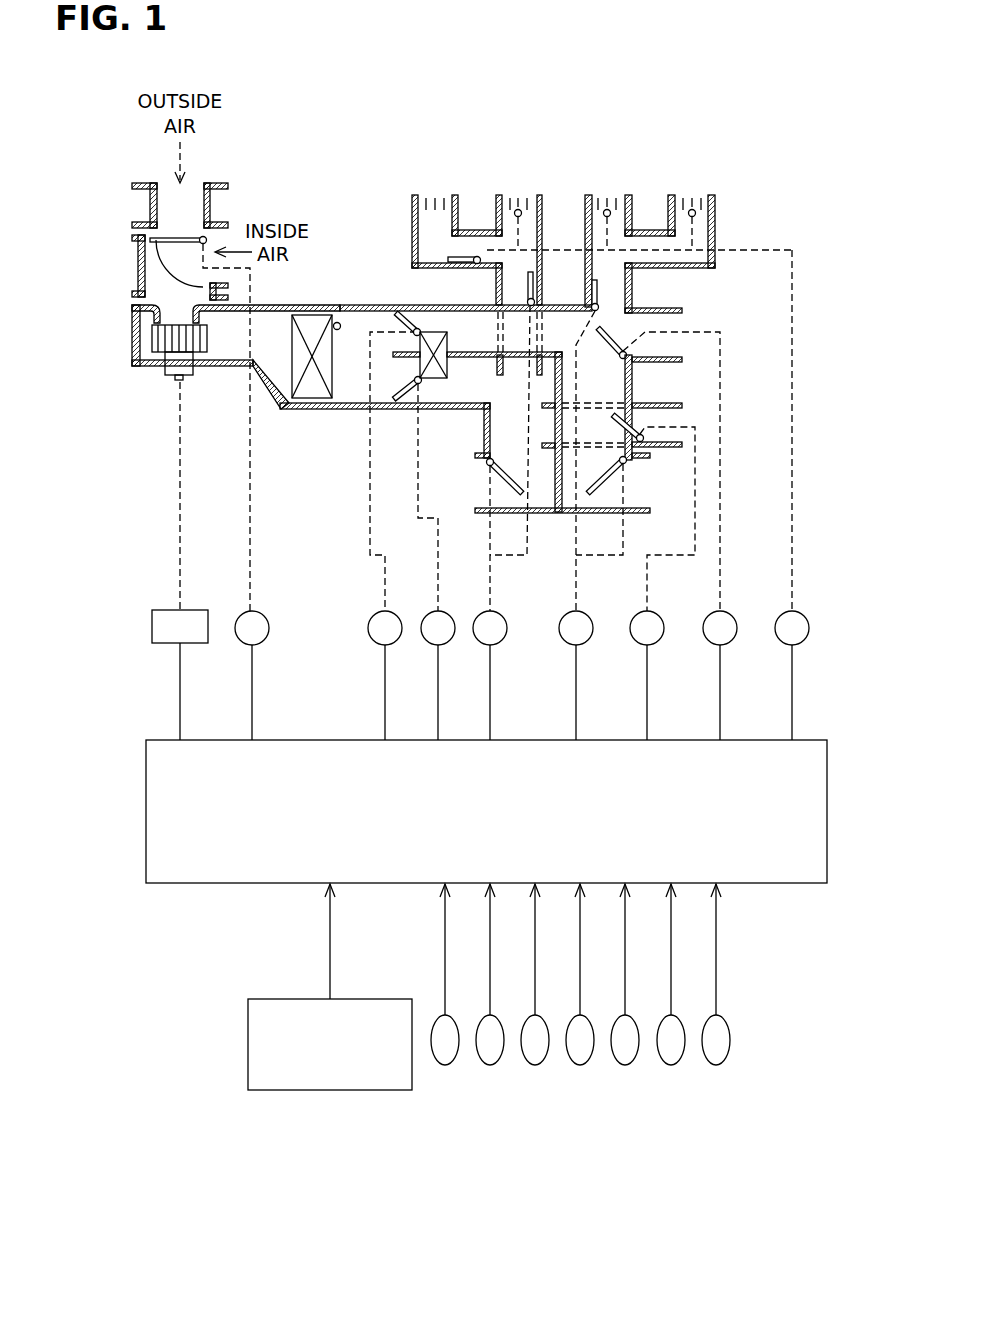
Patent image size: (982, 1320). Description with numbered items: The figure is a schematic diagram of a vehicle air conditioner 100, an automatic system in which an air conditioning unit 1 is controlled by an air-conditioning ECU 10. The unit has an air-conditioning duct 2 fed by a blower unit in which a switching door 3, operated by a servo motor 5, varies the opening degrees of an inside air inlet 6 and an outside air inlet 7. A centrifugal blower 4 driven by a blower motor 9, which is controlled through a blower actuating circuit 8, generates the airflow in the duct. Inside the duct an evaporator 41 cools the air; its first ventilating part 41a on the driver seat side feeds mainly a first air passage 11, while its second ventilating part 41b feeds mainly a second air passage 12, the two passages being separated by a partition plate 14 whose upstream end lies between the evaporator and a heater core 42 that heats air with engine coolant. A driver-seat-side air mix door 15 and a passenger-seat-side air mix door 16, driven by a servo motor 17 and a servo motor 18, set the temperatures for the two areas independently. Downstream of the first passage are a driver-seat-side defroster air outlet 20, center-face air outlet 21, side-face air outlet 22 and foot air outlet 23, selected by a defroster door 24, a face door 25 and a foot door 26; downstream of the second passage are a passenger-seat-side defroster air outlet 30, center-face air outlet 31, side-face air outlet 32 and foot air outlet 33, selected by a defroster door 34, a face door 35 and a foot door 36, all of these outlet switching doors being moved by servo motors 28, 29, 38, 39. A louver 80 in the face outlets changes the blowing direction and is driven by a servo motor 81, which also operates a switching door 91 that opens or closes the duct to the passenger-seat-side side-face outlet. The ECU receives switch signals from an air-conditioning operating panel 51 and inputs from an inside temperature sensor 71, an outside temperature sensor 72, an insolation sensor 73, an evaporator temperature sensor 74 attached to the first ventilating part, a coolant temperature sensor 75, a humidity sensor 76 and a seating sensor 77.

The air conditioning unit 1 is at (278, 202).
The air-conditioning duct 2 is at (318, 300).
The switching door 3 is at (180, 238).
The blower 4 is at (160, 340).
The servo motor 5 is at (248, 645).
The inside air inlet 6 is at (222, 238).
The outside air inlet 7 is at (172, 197).
The blower actuating circuit 8 is at (172, 645).
The blower motor 9 is at (170, 368).
The air-conditioning ECU 10 is at (215, 885).
The first air passage 11 is at (478, 325).
The second air passage 12 is at (473, 390).
The partition plate 14 is at (462, 350).
The driver-seat-side air mix door 15 is at (378, 308).
The passenger-seat-side air mix door 16 is at (396, 400).
The servo motor 17 is at (382, 645).
The servo motor 18 is at (435, 645).
The driver-seat-side defroster air outlet 20 is at (678, 325).
The driver-seat-side center-face air outlet 21 is at (612, 197).
The driver-seat-side side-face air outlet 22 is at (697, 197).
The driver-seat-side foot air outlet 23 is at (645, 482).
The driver-seat-side defroster door 24 is at (620, 340).
The driver-seat-side face door 25 is at (597, 300).
The driver-seat-side foot door 26 is at (605, 520).
The servo motor 28 is at (718, 645).
The servo motor 29 is at (574, 645).
The passenger-seat-side defroster air outlet 30 is at (677, 418).
The passenger-seat-side center-face air outlet 31 is at (523, 197).
The passenger-seat-side side-face air outlet 32 is at (438, 197).
The passenger-seat-side foot air outlet 33 is at (478, 485).
The passenger-seat-side defroster door 34 is at (637, 433).
The passenger-seat-side face door 35 is at (530, 278).
The passenger-seat-side foot door 36 is at (520, 520).
The servo motor 38 is at (645, 645).
The servo motor 39 is at (488, 645).
The evaporator 41 is at (312, 398).
The first ventilating part 41a is at (308, 313).
The second ventilating part 41b is at (305, 387).
The heater core 42 is at (440, 383).
The air-conditioning operating panel 51 is at (322, 1062).
The inside temperature sensor 71 is at (445, 1066).
The outside temperature sensor 72 is at (490, 1066).
The insolation sensor 73 is at (535, 1066).
The evaporator temperature sensor 74 is at (337, 330).
The coolant temperature sensor 75 is at (625, 1066).
The humidity sensor 76 is at (671, 1066).
The seating sensor 77 is at (716, 1066).
The louver 80 is at (707, 205).
The servo motor 81 is at (790, 645).
The switching door 91 is at (450, 258).
The air conditioner 100 is at (118, 572).